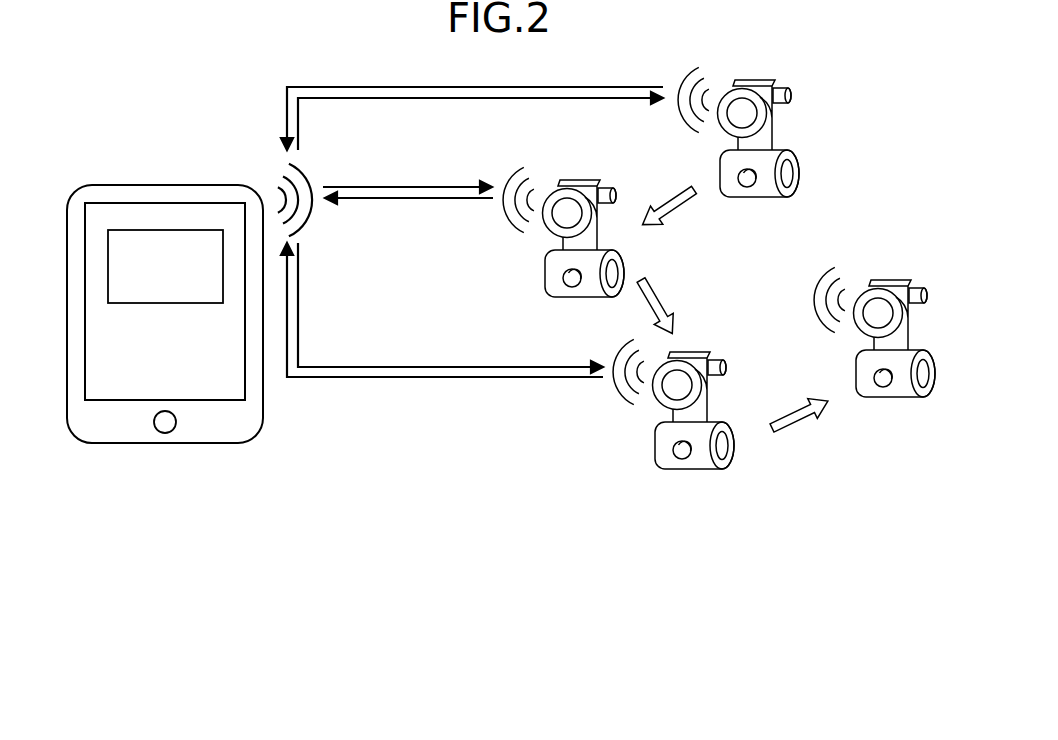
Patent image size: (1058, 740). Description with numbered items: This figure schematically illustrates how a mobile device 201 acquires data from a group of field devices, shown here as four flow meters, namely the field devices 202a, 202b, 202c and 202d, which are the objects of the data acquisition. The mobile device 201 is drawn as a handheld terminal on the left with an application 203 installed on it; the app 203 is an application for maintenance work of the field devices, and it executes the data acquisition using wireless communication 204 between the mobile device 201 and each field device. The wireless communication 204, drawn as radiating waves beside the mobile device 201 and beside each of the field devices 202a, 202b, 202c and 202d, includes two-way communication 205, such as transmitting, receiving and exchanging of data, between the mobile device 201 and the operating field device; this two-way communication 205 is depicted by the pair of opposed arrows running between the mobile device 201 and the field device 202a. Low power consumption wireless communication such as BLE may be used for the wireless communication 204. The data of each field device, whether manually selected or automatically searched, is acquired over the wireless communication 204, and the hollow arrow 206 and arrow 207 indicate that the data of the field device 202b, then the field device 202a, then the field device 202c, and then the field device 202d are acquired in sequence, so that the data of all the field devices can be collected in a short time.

The mobile device 201 is at (165, 445).
The field device 202a is at (545, 285).
The field device 202b is at (718, 165).
The field device 202c is at (653, 443).
The field device 202d is at (855, 365).
The application 203 is at (148, 230).
The wireless communication 204 is at (280, 178).
The two-way communication 205 is at (403, 186).
The arrow 206 is at (678, 212).
The arrow 207 is at (808, 420).